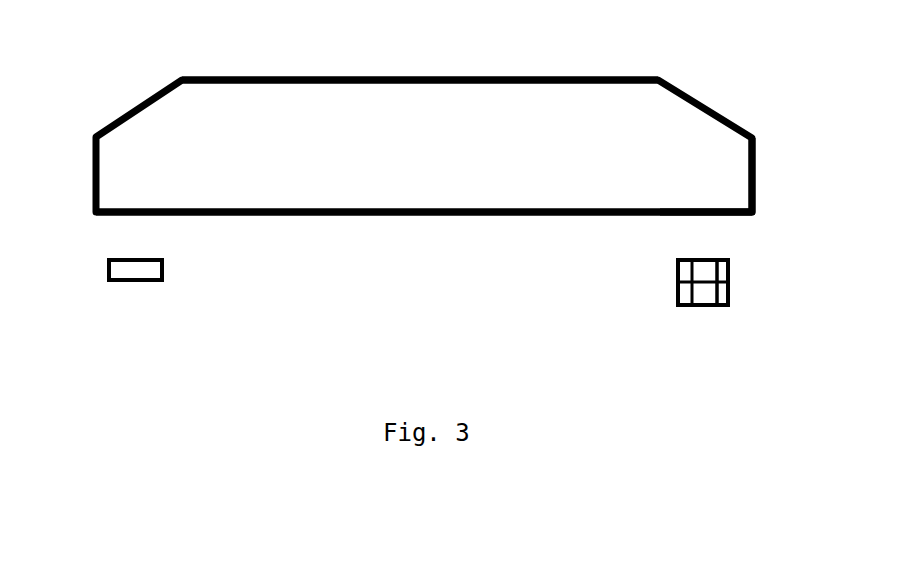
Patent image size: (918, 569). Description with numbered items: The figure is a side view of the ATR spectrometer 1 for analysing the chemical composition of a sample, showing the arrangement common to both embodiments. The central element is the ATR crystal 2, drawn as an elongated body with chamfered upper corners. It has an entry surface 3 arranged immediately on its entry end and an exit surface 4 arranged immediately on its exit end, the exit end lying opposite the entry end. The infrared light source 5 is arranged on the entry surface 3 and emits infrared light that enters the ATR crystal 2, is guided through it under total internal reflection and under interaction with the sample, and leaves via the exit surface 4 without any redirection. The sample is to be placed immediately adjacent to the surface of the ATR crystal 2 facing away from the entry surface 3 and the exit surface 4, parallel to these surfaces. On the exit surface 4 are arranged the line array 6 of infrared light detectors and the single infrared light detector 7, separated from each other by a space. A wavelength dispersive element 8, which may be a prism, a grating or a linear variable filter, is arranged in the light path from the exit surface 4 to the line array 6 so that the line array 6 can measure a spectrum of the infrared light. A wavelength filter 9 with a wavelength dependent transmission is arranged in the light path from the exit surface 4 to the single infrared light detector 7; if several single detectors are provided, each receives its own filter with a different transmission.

The ATR spectrometer 1 is at (493, 40).
The ATR crystal 2 is at (258, 77).
The entry surface 3 is at (143, 214).
The exit surface 4 is at (705, 214).
The infrared light source 5 is at (106, 268).
The line array of infrared light detectors 6 is at (728, 293).
The single infrared light detector 7 is at (705, 305).
The wavelength dispersive element 8 is at (728, 270).
The wavelength filter 9 is at (703, 260).